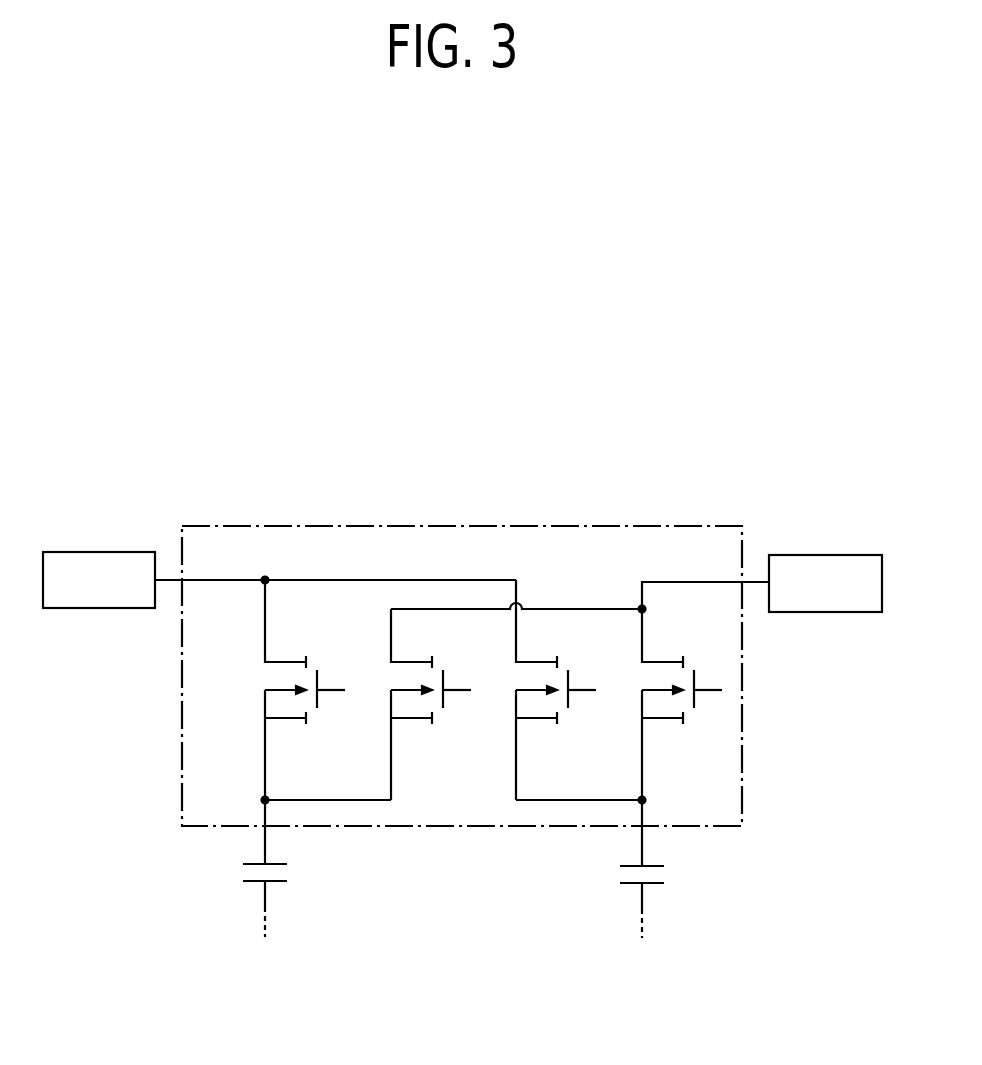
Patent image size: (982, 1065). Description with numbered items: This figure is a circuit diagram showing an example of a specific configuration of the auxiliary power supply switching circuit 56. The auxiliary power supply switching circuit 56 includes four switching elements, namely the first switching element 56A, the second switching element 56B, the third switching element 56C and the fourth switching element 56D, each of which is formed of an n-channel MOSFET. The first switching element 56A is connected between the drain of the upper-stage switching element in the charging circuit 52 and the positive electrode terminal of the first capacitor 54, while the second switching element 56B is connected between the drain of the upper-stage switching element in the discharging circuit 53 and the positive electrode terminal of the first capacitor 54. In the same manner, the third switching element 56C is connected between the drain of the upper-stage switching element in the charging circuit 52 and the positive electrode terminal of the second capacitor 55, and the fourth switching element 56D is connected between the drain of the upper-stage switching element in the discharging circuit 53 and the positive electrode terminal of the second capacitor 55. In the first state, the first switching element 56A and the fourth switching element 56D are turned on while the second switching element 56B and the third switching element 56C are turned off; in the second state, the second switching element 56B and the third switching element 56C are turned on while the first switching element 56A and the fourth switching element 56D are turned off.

The charging circuit 52 is at (98, 552).
The discharging circuit 53 is at (825, 555).
The first capacitor 54 is at (278, 864).
The second capacitor 55 is at (655, 866).
The auxiliary power supply switching circuit 56 is at (658, 526).
The first switching element 56A is at (265, 700).
The second switching element 56B is at (391, 700).
The third switching element 56C is at (516, 700).
The fourth switching element 56D is at (642, 700).